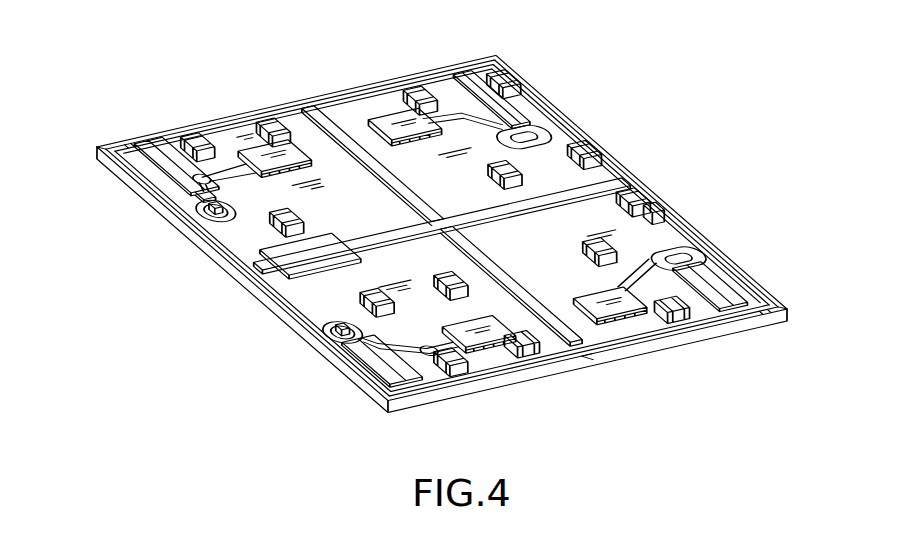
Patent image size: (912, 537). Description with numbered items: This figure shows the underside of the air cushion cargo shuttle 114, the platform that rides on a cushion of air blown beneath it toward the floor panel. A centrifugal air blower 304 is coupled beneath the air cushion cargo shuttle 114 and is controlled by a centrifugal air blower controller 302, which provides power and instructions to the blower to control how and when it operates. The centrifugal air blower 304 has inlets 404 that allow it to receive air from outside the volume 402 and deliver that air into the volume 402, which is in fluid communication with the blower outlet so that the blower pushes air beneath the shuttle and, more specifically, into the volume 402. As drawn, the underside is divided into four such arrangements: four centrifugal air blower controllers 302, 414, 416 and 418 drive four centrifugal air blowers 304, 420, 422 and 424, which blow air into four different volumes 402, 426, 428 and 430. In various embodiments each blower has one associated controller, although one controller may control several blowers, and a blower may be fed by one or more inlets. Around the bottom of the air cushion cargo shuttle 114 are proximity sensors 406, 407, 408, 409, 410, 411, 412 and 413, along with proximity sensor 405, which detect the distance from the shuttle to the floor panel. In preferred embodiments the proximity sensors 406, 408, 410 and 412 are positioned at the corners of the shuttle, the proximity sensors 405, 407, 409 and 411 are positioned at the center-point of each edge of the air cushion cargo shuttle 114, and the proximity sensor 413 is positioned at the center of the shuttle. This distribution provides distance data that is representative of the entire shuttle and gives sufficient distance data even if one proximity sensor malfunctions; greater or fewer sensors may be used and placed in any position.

The air cushion cargo shuttle 114 is at (175, 73).
The centrifugal air blower controller 302 is at (295, 150).
The centrifugal air blower 304 is at (190, 198).
The volume 402 is at (230, 242).
The inlets 404 is at (400, 392).
The proximity sensor 405 is at (585, 352).
The proximity sensor 406 is at (392, 394).
The proximity sensor 407 is at (262, 268).
The proximity sensor 408 is at (772, 306).
The proximity sensor 409 is at (636, 170).
The proximity sensor 410 is at (490, 60).
The proximity sensor 411 is at (297, 100).
The proximity sensor 412 is at (97, 148).
The proximity sensor 413 is at (600, 168).
The centrifugal air blower controller 414 is at (392, 117).
The centrifugal air blower controller 416 is at (607, 305).
The centrifugal air blower controller 418 is at (473, 340).
The centrifugal air blower 420 is at (578, 140).
The centrifugal air blower 422 is at (683, 258).
The centrifugal air blower 424 is at (330, 328).
The volume 426 is at (590, 255).
The volume 428 is at (467, 170).
The volume 430 is at (375, 361).